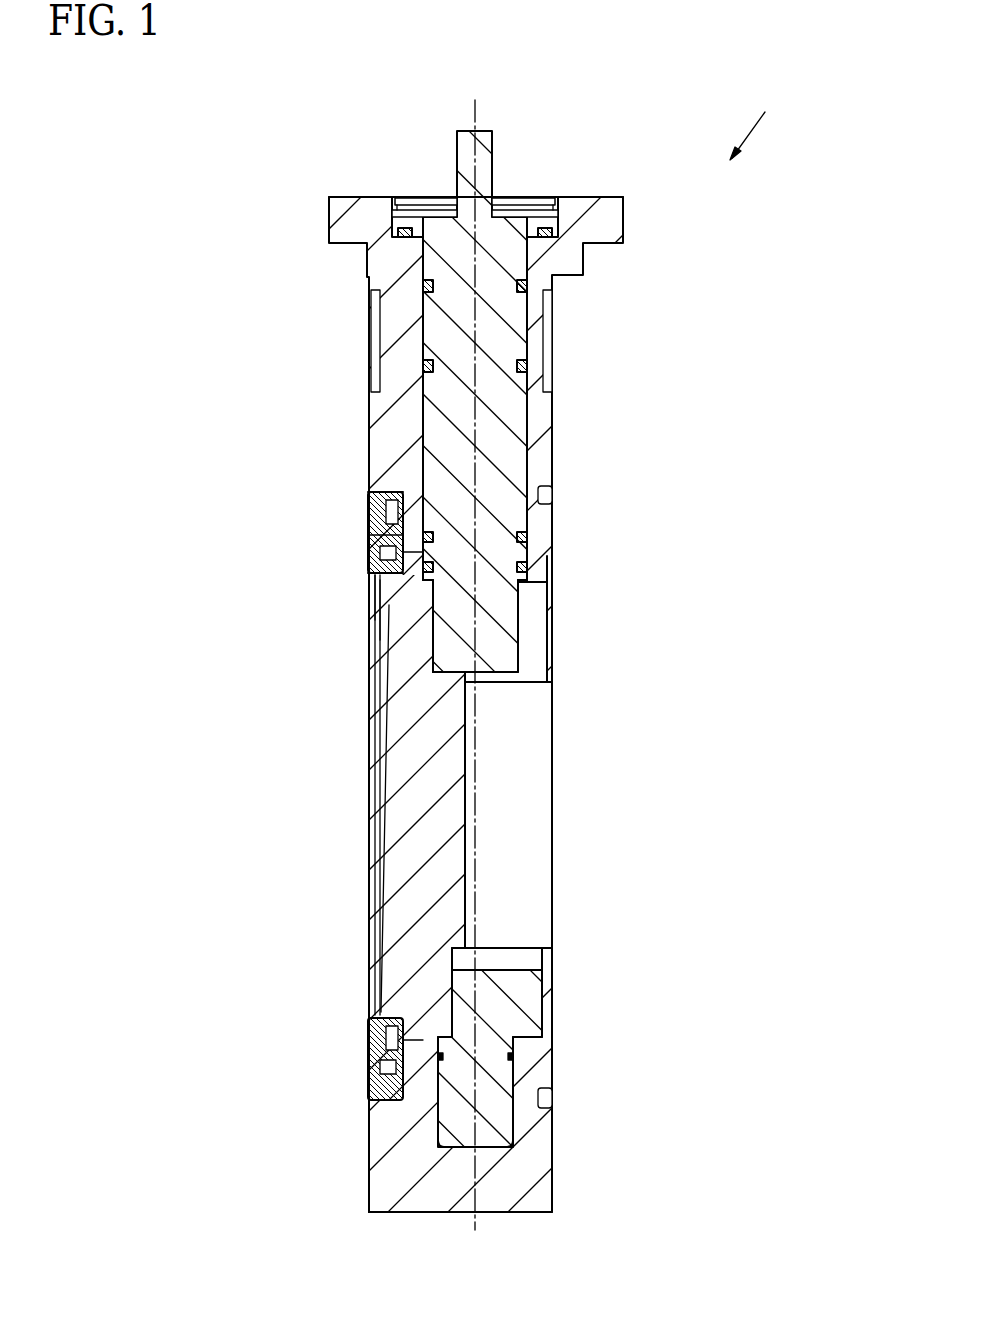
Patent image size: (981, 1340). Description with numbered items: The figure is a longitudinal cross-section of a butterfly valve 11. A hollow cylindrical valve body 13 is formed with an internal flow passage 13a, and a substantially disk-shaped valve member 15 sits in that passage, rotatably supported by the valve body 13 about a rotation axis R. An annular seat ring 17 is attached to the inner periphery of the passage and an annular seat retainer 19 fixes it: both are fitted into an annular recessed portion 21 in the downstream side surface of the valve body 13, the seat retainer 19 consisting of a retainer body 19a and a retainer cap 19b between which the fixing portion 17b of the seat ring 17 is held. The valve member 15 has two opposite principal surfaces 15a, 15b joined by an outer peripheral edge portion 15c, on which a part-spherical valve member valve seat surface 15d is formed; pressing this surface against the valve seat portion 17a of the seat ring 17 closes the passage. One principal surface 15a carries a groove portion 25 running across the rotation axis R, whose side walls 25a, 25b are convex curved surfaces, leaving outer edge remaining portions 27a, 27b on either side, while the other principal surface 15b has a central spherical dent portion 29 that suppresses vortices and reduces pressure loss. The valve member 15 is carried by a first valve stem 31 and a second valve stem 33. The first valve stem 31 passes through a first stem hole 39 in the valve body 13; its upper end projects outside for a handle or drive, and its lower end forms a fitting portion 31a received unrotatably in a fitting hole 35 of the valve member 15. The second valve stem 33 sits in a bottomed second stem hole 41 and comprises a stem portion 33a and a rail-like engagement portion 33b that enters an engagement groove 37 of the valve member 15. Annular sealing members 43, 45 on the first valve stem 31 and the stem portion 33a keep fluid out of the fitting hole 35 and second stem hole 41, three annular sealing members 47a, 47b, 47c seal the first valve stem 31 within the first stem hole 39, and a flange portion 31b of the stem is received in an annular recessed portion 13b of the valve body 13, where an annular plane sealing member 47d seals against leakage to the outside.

The butterfly valve 11 is at (765, 123).
The valve body 13 is at (565, 262).
The internal flow passage 13a is at (535, 785).
The annular recessed portion 13b is at (393, 212).
The valve member 15 is at (390, 976).
The principal surface 15a is at (548, 648).
The principal surface 15b is at (380, 1000).
The outer peripheral edge portion 15c is at (378, 1115).
The valve member valve seat surface 15d is at (372, 1045).
The seat ring 17 is at (250, 590).
The valve seat portion 17a is at (383, 598).
The fixing portion 17b is at (380, 570).
The seat retainer 19 is at (250, 498).
The retainer body 19a is at (372, 527).
The retainer cap 19b is at (370, 556).
The annular recessed portion 21 is at (388, 498).
The groove portion 25 is at (480, 835).
The side wall 25a is at (545, 690).
The side wall 25b is at (540, 945).
The outer edge remaining portion 27a is at (535, 592).
The outer edge remaining portion 27b is at (525, 962).
The spherical dent portion 29 is at (383, 800).
The first valve stem 31 is at (518, 423).
The fitting portion 31a is at (510, 628).
The flange portion 31b is at (412, 212).
The second valve stem 33 is at (673, 1050).
The stem portion 33a is at (540, 1102).
The engagement portion 33b is at (540, 1042).
The fitting hole 35 is at (445, 655).
The engagement groove 37 is at (400, 968).
The first stem hole 39 is at (548, 492).
The second stem hole 41 is at (455, 1128).
The annular sealing member 43 is at (533, 545).
The annular sealing member 45 is at (498, 1110).
The annular sealing member 47a is at (433, 540).
The annular sealing member 47b is at (425, 366).
The annular sealing member 47c is at (425, 286).
The annular plane sealing member 47d is at (405, 236).
The rotation axis R is at (477, 118).